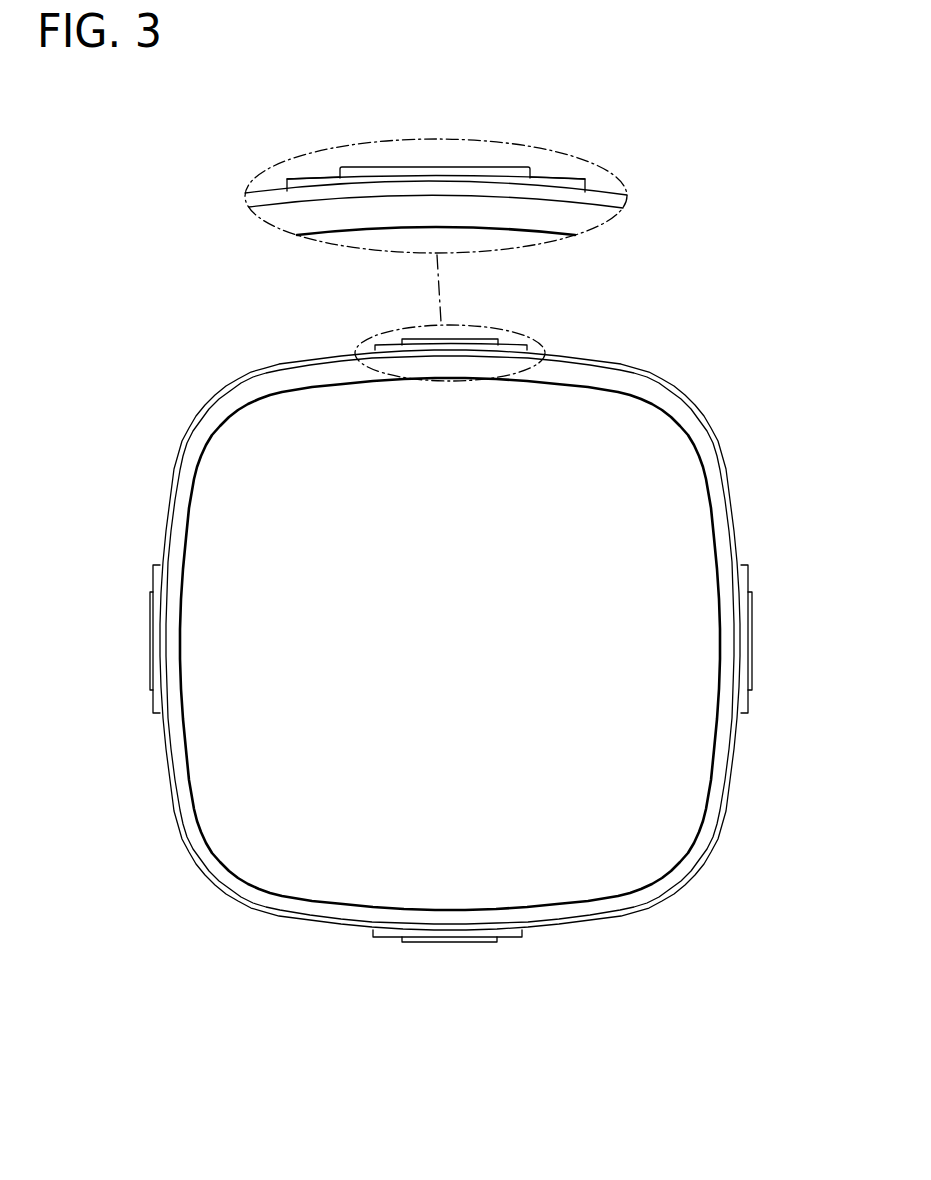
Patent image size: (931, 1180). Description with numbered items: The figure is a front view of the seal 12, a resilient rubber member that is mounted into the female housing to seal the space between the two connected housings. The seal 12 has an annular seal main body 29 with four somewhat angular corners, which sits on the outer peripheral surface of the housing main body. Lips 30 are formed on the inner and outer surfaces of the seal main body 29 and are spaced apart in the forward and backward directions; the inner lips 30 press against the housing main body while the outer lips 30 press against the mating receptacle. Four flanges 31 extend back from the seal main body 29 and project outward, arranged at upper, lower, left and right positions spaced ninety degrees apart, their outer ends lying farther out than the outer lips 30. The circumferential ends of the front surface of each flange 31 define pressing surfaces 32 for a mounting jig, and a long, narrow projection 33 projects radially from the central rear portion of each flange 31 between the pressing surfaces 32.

The seal 12 is at (619, 360).
The seal main body 29 is at (707, 452).
The lips 30 is at (732, 495).
The flanges 31 is at (745, 573).
The pressing surfaces 32 is at (311, 180).
The projection 33 is at (450, 170).